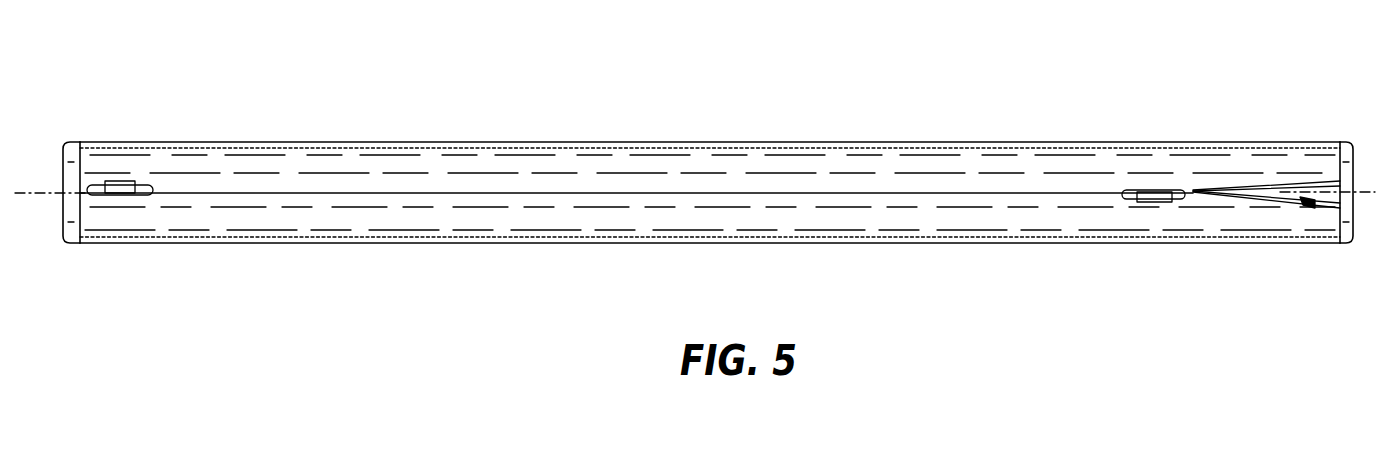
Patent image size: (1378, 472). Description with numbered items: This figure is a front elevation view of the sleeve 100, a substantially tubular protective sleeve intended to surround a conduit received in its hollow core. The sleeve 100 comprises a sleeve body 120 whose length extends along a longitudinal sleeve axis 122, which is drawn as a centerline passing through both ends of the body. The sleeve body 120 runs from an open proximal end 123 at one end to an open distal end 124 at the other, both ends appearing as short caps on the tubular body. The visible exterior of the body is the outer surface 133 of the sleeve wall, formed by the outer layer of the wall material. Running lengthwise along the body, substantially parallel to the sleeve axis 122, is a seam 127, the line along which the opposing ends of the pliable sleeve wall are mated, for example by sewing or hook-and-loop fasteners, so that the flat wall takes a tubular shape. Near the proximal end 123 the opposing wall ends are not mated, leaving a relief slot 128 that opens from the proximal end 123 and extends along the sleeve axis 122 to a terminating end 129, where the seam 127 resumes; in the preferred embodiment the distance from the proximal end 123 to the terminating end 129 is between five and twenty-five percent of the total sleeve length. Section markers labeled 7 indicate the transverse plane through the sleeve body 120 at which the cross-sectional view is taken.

The sleeve 100 is at (901, 98).
The sleeve body 120 is at (362, 165).
The longitudinal sleeve axis 122 is at (46, 197).
The open proximal end 123 is at (1353, 167).
The open distal end 124 is at (63, 170).
The seam 127 is at (408, 195).
The relief slot 128 is at (1310, 207).
The terminating end 129 is at (1205, 192).
The outer surface 133 is at (905, 212).
The section line 7- 7 is at (580, 90).